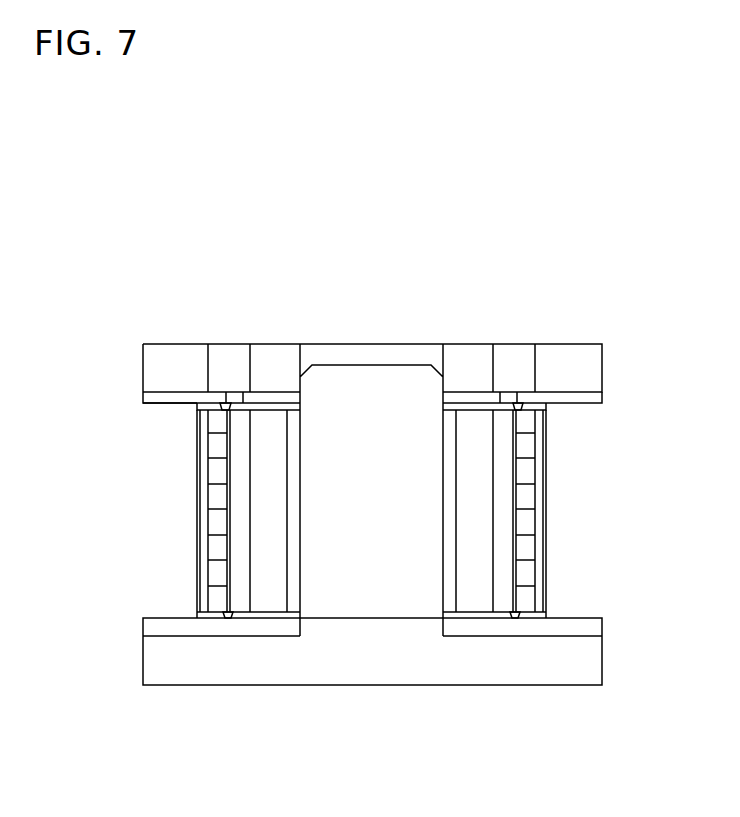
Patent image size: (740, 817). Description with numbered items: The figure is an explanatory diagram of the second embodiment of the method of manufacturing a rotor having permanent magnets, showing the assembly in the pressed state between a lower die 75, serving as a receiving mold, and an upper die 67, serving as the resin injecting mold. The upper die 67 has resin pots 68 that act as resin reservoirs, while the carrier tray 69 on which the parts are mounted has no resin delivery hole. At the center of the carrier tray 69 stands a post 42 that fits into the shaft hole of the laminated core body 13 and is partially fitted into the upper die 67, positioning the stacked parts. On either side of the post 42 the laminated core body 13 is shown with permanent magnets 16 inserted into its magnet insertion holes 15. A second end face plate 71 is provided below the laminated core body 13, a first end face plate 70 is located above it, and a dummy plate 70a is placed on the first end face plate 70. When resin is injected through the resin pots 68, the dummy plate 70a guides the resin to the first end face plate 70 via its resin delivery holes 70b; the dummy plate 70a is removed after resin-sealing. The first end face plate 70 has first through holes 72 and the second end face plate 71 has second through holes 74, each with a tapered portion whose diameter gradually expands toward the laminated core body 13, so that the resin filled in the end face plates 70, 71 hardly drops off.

The laminated core body 13 is at (563, 508).
The magnet insertion holes 15 is at (530, 478).
The permanent magnets 16 is at (528, 547).
The post 42 is at (369, 385).
The upper die 67 is at (568, 355).
The resin pots 68 is at (237, 360).
The carrier tray 69 is at (615, 613).
The first end face plate 70 is at (470, 408).
The dummy plate 70a is at (153, 405).
The resin delivery holes 70b is at (232, 392).
The second end face plate 71 is at (478, 615).
The first through holes 72 is at (527, 402).
The second through holes 74 is at (513, 613).
The lower die 75 is at (278, 663).